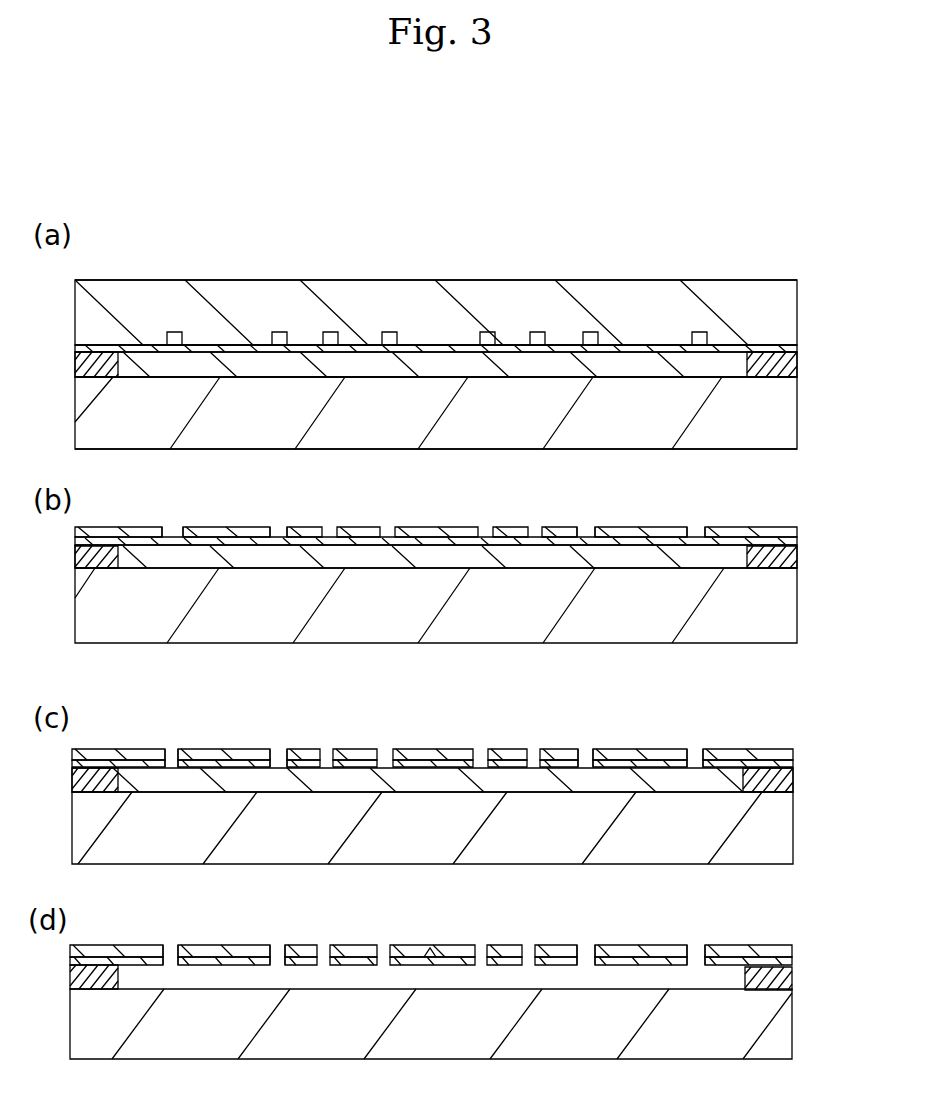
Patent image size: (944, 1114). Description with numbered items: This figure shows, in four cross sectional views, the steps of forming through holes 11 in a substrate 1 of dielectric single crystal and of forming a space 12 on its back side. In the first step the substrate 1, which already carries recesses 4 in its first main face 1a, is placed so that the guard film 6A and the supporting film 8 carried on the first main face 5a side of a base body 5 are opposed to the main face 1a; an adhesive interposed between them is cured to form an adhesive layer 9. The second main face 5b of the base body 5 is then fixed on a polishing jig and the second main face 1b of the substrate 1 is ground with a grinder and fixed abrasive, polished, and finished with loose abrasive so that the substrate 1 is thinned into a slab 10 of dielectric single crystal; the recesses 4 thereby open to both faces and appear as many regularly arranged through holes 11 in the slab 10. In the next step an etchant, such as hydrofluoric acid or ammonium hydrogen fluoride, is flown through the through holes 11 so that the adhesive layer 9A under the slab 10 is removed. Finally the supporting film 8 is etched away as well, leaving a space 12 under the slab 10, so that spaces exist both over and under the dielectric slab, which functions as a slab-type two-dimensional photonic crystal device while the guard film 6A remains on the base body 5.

The substrate 1 is at (220, 278).
The main face 1a is at (407, 350).
The second main face 1b is at (372, 280).
The recesses 4 is at (174, 332).
The base body 5 is at (797, 422).
The first main face of the base body 5a is at (637, 380).
The second main face of the base body 5b is at (433, 452).
The guard film 6A is at (797, 366).
The supporting film 8 is at (520, 365).
The adhesive layer 9 is at (445, 345).
The adhesive layer 9A is at (793, 757).
The slab 10 is at (126, 527).
The through holes 11 is at (173, 527).
The space 12 is at (430, 950).